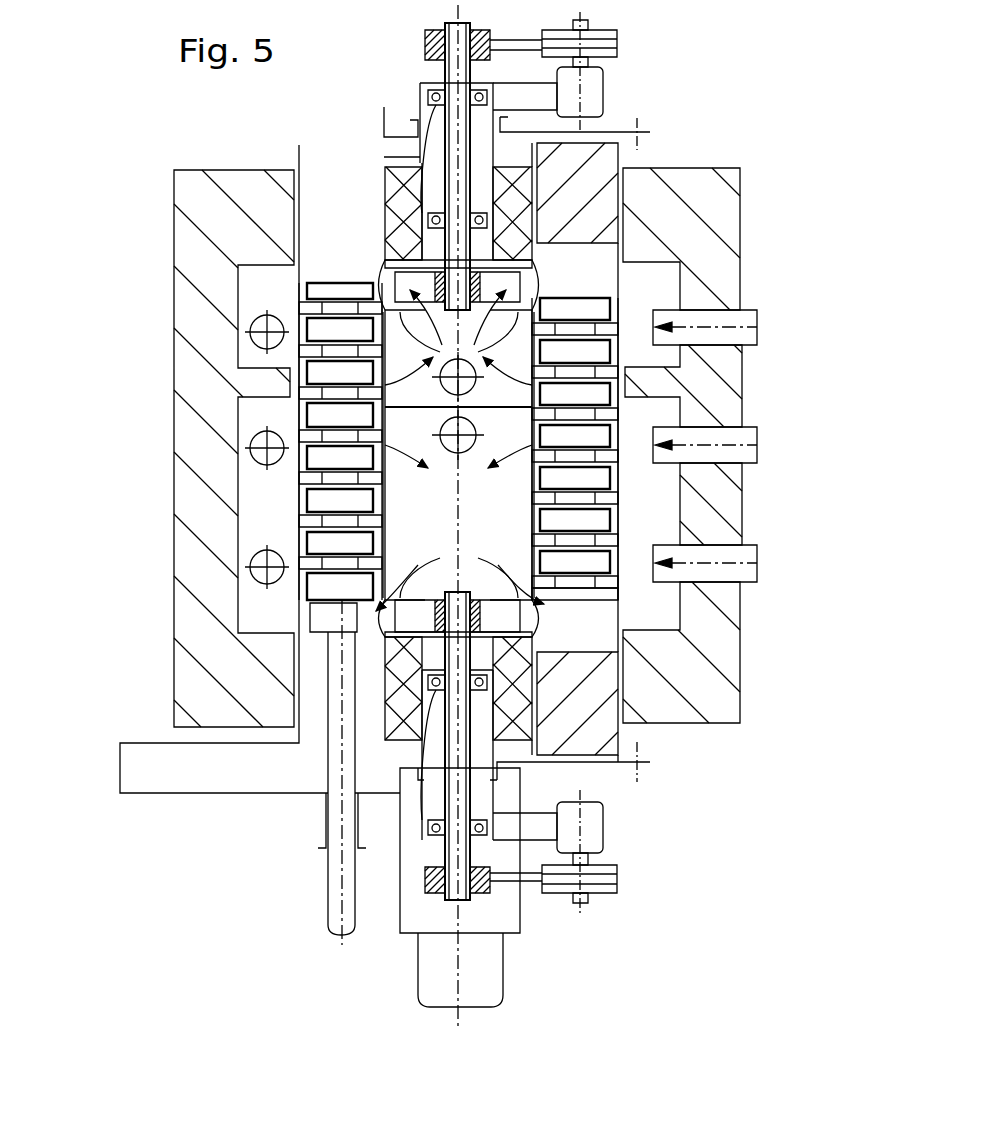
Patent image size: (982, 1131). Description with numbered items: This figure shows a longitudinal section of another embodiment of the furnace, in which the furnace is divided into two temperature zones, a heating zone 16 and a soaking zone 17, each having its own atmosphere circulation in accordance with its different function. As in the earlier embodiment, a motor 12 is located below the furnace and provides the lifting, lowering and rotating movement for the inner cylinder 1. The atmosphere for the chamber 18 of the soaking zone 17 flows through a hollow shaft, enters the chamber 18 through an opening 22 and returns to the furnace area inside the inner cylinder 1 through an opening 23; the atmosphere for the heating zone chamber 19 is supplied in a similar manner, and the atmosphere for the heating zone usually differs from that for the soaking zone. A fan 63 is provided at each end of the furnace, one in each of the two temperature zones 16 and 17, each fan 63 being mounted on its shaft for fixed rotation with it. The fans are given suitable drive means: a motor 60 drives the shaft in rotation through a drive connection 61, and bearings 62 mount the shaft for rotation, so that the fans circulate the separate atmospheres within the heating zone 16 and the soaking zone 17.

The inner cylinder 1 is at (463, 521).
The motor 12 is at (483, 972).
The heating zone 16 is at (262, 292).
The soaking zone 17 is at (268, 507).
The chamber of the soaking zone 18 is at (343, 580).
The heating zone chamber 19 is at (322, 320).
The opening 22 is at (381, 291).
The opening 23 is at (383, 418).
The motor 60 is at (592, 93).
The drive connection 61 is at (503, 44).
The bearings 62 is at (432, 106).
The fan 63 is at (460, 450).